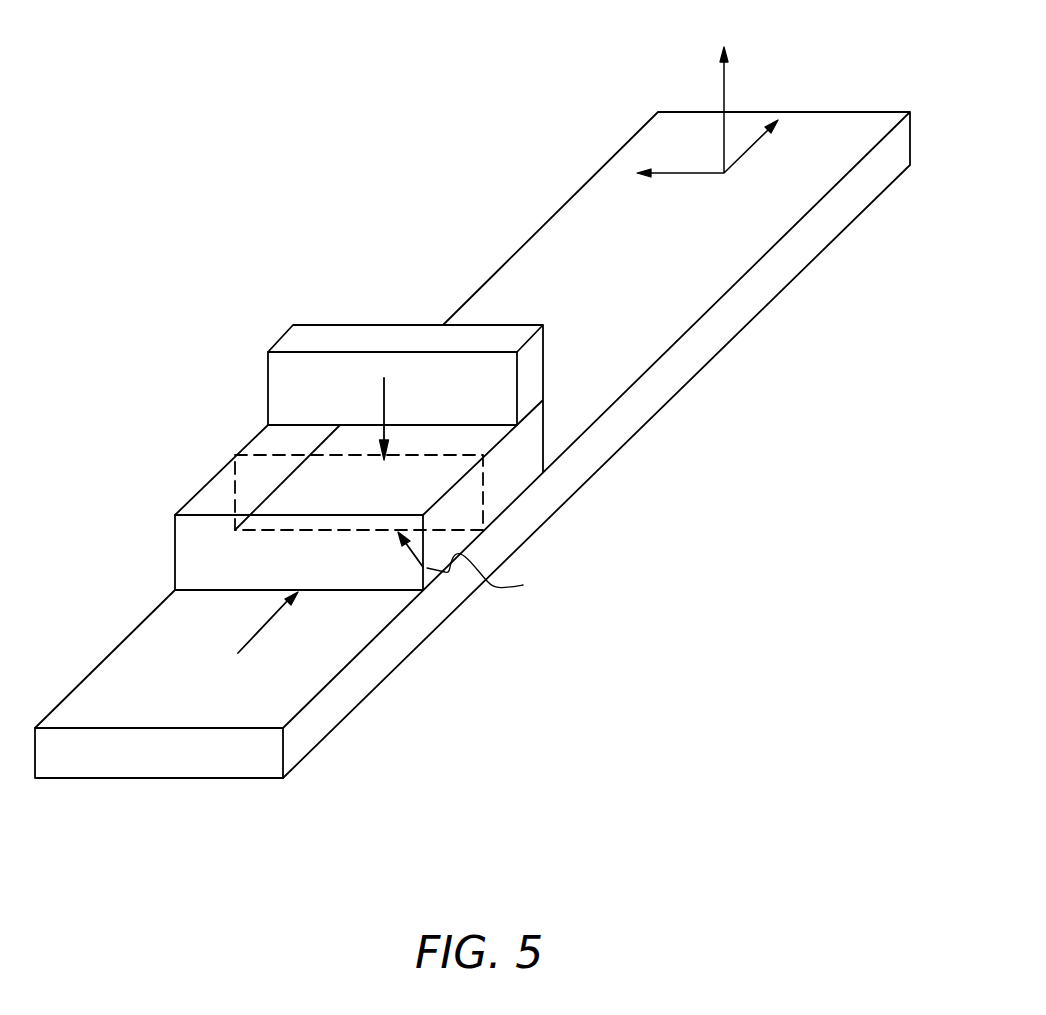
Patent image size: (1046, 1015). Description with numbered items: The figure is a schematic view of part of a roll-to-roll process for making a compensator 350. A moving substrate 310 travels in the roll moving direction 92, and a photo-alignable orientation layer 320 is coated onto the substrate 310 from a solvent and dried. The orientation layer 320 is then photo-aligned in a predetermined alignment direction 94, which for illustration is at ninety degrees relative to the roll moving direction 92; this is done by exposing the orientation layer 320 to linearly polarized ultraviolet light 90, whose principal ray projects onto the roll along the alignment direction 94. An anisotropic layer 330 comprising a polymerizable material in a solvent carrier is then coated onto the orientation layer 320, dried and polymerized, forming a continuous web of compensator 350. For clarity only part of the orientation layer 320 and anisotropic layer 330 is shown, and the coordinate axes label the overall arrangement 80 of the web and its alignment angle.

The sample structure with coordinate system 80 is at (608, 62).
The linearly polarized ultraviolet light 90 is at (384, 410).
The roll moving direction 92 is at (263, 633).
The alignment direction 94 is at (423, 567).
The moving substrate 310 is at (143, 650).
The photo-alignable orientation layer 320 is at (175, 548).
The anisotropic layer 330 is at (308, 338).
The compensator 350 is at (203, 431).